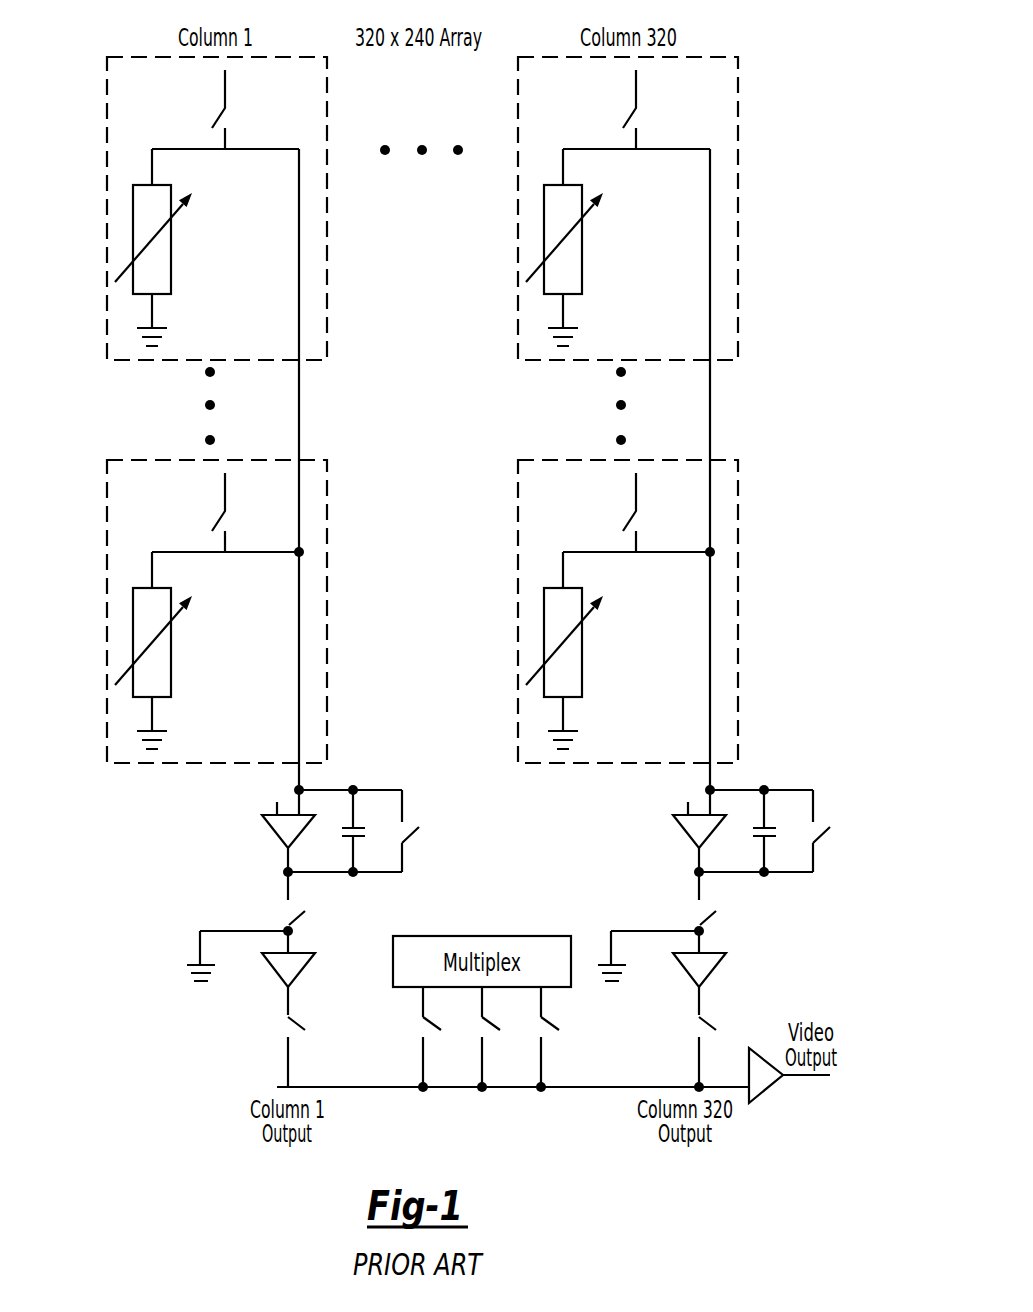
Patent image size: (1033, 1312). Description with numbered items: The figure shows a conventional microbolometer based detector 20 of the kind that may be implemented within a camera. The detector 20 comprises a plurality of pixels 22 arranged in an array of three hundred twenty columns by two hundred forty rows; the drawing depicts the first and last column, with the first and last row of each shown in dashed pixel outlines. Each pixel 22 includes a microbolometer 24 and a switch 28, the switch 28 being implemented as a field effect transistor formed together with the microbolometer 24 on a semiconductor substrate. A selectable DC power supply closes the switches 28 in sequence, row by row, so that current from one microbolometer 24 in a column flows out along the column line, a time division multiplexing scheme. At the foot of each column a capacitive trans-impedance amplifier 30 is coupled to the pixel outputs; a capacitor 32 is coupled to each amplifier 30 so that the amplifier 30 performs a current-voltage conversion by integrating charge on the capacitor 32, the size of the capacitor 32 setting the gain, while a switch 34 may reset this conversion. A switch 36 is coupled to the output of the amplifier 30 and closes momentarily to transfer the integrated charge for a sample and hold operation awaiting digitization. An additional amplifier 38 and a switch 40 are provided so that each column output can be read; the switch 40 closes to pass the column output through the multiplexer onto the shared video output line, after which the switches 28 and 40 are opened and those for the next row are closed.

The microbolometer based detector 20 is at (746, 36).
The pixel 22 is at (107, 75).
The microbolometer 24 is at (172, 253).
The switch 28 is at (226, 92).
The capacitive trans-impedance amplifier 30 is at (272, 840).
The capacitor 32 is at (357, 826).
The switch 34 is at (424, 843).
The switch 36 is at (295, 918).
The amplifier 38 is at (272, 972).
The switch 40 is at (297, 1022).